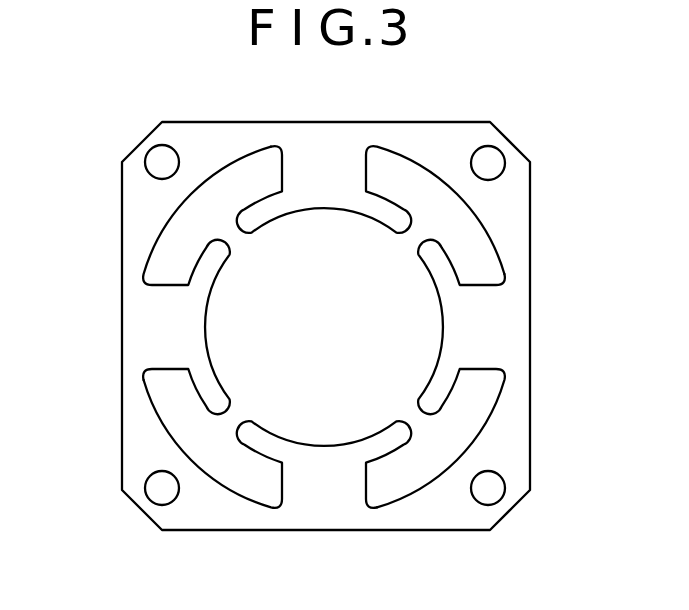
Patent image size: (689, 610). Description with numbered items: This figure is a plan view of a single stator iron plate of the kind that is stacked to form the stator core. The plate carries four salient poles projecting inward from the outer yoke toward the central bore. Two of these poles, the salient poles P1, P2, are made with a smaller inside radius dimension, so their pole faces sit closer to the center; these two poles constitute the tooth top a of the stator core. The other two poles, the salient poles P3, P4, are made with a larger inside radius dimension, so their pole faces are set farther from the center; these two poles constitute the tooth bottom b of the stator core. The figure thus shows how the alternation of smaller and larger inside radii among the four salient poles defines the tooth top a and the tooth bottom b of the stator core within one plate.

The salient pole P1 is at (330, 175).
The salient pole P2 is at (470, 320).
The salient pole P3 is at (328, 485).
The salient pole P4 is at (172, 317).
The tooth top a is at (423, 284).
The tooth bottom b is at (222, 376).